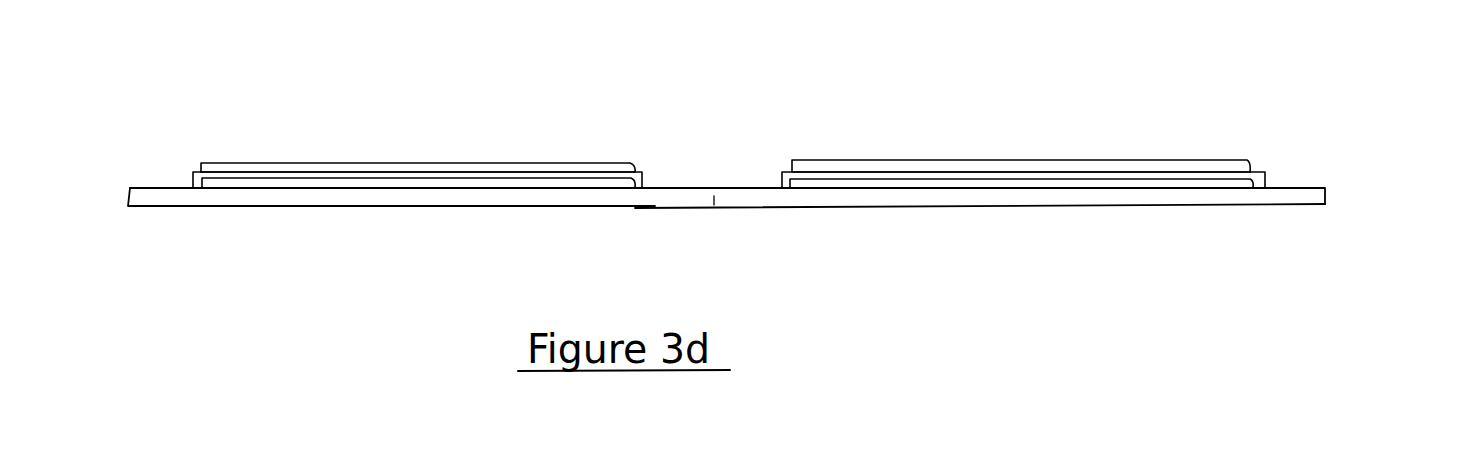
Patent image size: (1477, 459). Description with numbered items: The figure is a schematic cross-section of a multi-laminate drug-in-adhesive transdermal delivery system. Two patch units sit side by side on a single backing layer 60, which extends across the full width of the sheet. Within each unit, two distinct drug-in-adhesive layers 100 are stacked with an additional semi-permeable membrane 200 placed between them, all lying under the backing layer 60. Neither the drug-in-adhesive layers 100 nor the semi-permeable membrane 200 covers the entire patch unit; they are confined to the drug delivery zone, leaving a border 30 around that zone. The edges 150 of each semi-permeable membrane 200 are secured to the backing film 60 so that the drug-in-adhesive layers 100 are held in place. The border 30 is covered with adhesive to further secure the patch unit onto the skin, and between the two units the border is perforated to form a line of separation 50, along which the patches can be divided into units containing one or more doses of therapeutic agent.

The border 30 is at (157, 187).
The line of separation 50 is at (713, 190).
The backing layer 60 is at (1085, 196).
The drug-in-adhesive layer 100 is at (525, 162).
The edges of the semi-permeable membrane 150 is at (193, 172).
The semi-permeable membrane 200 is at (575, 175).